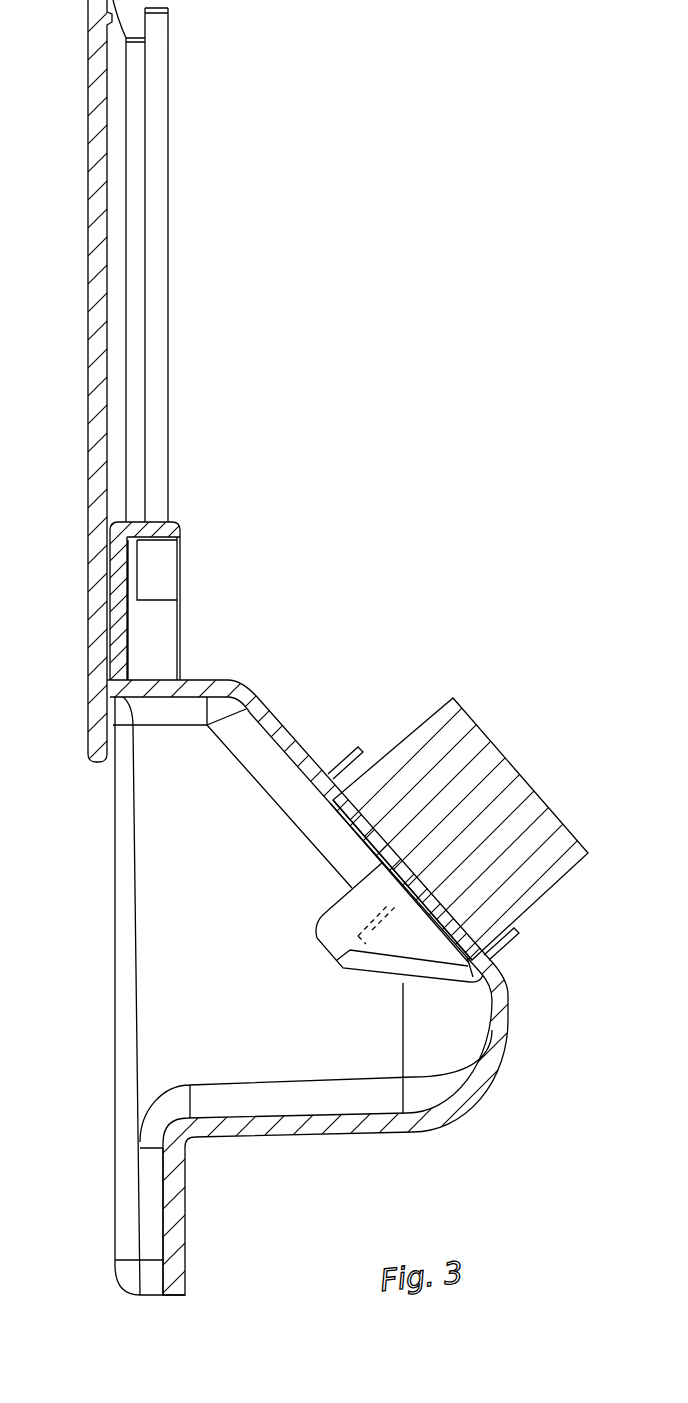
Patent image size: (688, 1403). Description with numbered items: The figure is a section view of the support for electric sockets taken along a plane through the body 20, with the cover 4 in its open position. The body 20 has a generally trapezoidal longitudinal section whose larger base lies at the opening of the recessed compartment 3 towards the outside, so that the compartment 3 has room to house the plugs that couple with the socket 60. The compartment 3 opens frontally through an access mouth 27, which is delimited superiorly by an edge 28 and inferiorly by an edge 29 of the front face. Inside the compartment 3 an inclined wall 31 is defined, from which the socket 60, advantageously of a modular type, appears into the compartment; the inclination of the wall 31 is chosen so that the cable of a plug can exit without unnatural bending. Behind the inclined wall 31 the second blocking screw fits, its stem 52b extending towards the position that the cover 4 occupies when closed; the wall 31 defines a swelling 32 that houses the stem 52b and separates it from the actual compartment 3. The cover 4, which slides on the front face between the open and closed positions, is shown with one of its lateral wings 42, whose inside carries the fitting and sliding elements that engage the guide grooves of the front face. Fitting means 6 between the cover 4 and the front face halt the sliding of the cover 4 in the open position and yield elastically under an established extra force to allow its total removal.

The cover 4 is at (84, 365).
The lateral wing 42 is at (179, 305).
The edge 28 is at (108, 602).
The fitting means 6 is at (101, 683).
The body 20 is at (229, 671).
The inclined wall 31 is at (304, 739).
The socket 60 is at (431, 704).
The recessed compartment 3 is at (233, 944).
The swelling 32 is at (379, 986).
The stem 52b is at (392, 929).
The access mouth 27 is at (125, 1039).
The edge 29 is at (154, 1225).